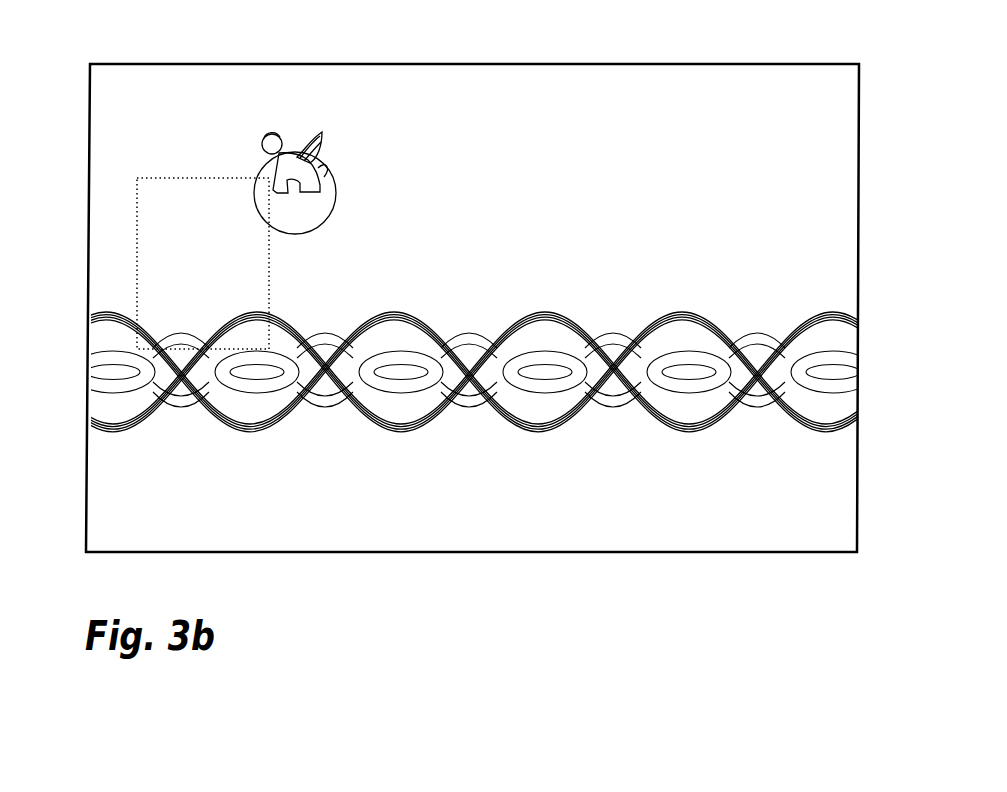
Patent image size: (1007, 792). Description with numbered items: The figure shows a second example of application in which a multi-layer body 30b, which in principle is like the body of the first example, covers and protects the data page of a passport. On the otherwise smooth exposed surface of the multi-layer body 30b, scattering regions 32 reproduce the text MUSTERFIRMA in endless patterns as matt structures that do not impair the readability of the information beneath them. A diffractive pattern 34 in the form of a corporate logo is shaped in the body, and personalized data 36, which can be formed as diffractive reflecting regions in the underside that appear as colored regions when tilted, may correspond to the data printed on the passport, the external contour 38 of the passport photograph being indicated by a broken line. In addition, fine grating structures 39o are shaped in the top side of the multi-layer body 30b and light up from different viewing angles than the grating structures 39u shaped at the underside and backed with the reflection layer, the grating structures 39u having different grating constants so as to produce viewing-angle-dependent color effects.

The multi-layer body 30b is at (327, 591).
The scattering regions 32 is at (503, 497).
The diffractive pattern 34 is at (293, 147).
The personalized data 36 is at (383, 160).
The external contour of passport photograph 38 is at (136, 233).
The fine grating structures 39o is at (715, 405).
The grating structures 39u is at (800, 420).